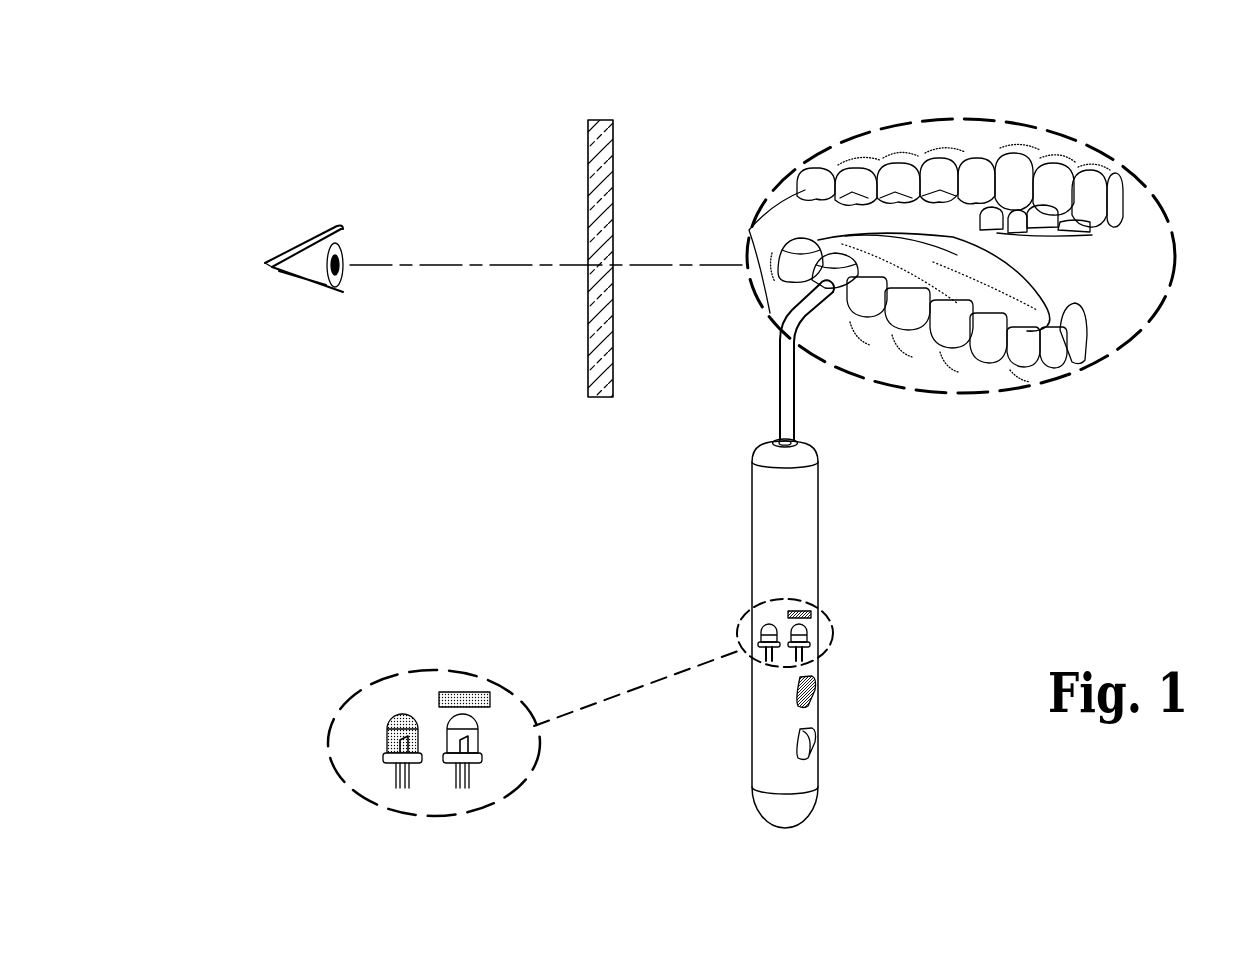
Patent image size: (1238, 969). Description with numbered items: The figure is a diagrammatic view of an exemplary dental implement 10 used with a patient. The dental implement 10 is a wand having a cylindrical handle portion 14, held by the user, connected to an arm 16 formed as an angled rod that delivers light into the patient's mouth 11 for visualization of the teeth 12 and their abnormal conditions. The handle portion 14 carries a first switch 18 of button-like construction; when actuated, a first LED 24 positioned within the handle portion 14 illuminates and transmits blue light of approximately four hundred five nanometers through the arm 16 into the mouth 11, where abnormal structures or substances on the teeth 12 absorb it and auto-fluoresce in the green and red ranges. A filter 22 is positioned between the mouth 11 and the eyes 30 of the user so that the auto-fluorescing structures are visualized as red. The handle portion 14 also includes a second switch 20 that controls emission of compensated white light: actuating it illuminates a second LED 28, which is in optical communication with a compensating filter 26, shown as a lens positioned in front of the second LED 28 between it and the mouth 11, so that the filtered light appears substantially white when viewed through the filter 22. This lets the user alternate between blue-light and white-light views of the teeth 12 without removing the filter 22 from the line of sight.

The dental implement 10 is at (960, 479).
The mouth 11 is at (1077, 253).
The teeth 12 is at (926, 152).
The handle portion 14 is at (820, 575).
The arm 16 is at (787, 393).
The first switch 18 is at (817, 692).
The second switch 20 is at (817, 746).
The filter 22 is at (613, 147).
The first LED 24 is at (387, 742).
The compensating filter 26 is at (458, 692).
The second LED 28 is at (478, 737).
The eyes 30 is at (301, 223).